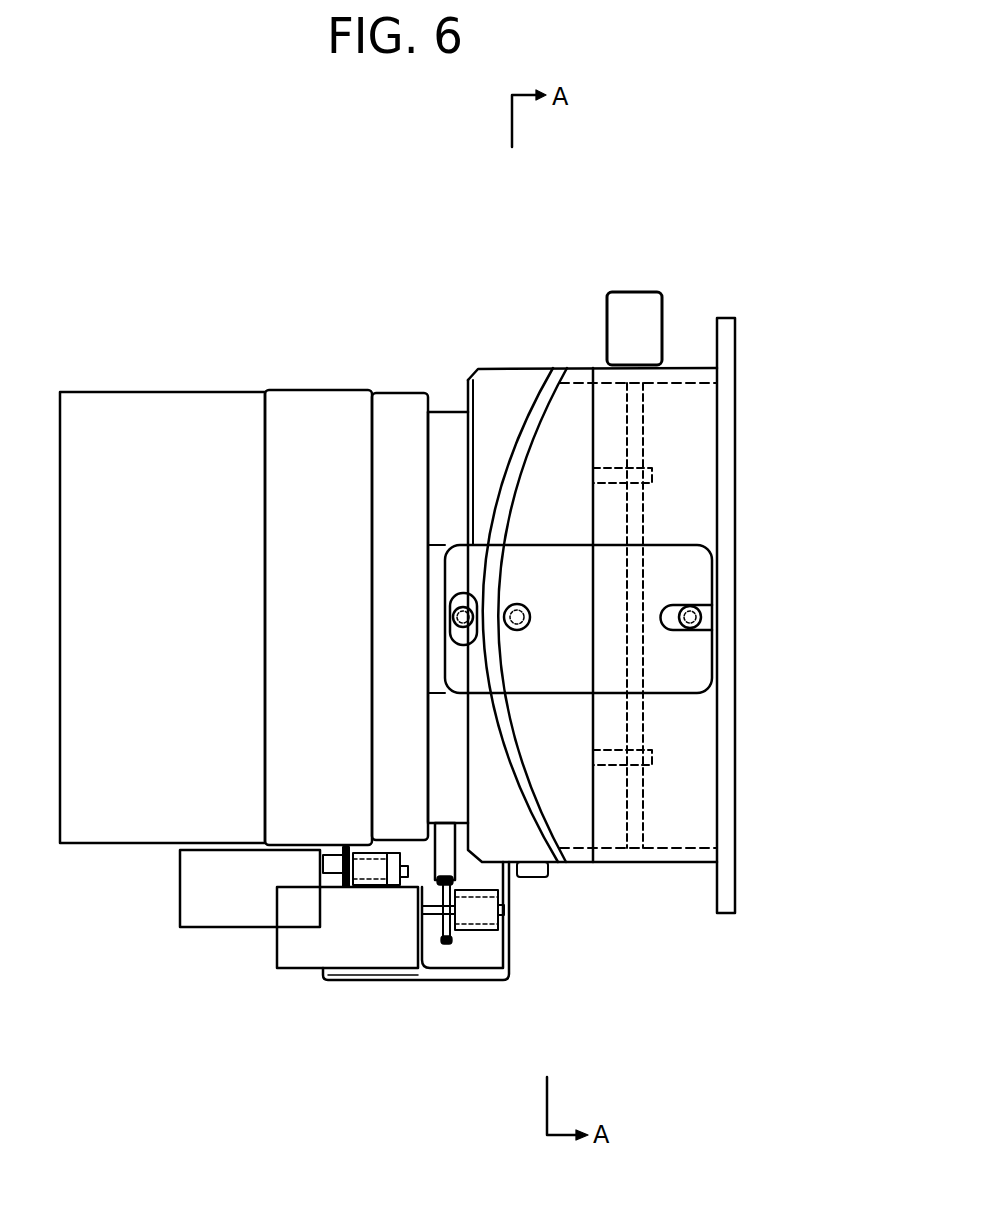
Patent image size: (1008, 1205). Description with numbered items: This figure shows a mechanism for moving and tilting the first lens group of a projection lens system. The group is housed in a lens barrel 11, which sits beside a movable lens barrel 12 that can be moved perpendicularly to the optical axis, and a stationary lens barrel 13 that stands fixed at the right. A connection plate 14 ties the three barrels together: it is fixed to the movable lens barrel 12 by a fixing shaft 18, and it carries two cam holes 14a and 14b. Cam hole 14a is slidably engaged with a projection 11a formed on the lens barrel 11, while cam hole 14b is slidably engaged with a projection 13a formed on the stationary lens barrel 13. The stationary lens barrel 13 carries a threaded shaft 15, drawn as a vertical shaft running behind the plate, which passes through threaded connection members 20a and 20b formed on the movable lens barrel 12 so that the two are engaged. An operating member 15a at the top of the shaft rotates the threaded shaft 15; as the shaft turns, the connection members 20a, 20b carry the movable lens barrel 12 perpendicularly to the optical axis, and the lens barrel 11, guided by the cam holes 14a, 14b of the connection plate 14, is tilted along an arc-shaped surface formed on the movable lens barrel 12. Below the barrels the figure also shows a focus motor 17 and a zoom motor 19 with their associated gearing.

The lens barrel 11 is at (563, 364).
The projection 11a is at (477, 612).
The movable lens barrel 12 is at (568, 405).
The stationary lens barrel 13 is at (693, 400).
The projection 13a is at (696, 606).
The connection plate 14 is at (478, 555).
The cam hole 14a is at (470, 643).
The cam hole 14b is at (678, 637).
The threaded shaft 15 is at (612, 286).
The operating member 15a is at (635, 313).
The focus motor 17 is at (177, 905).
The fixing shaft 18 is at (530, 615).
The zoom motor 19 is at (298, 957).
The connection member 20a is at (652, 478).
The connection member 20b is at (652, 758).